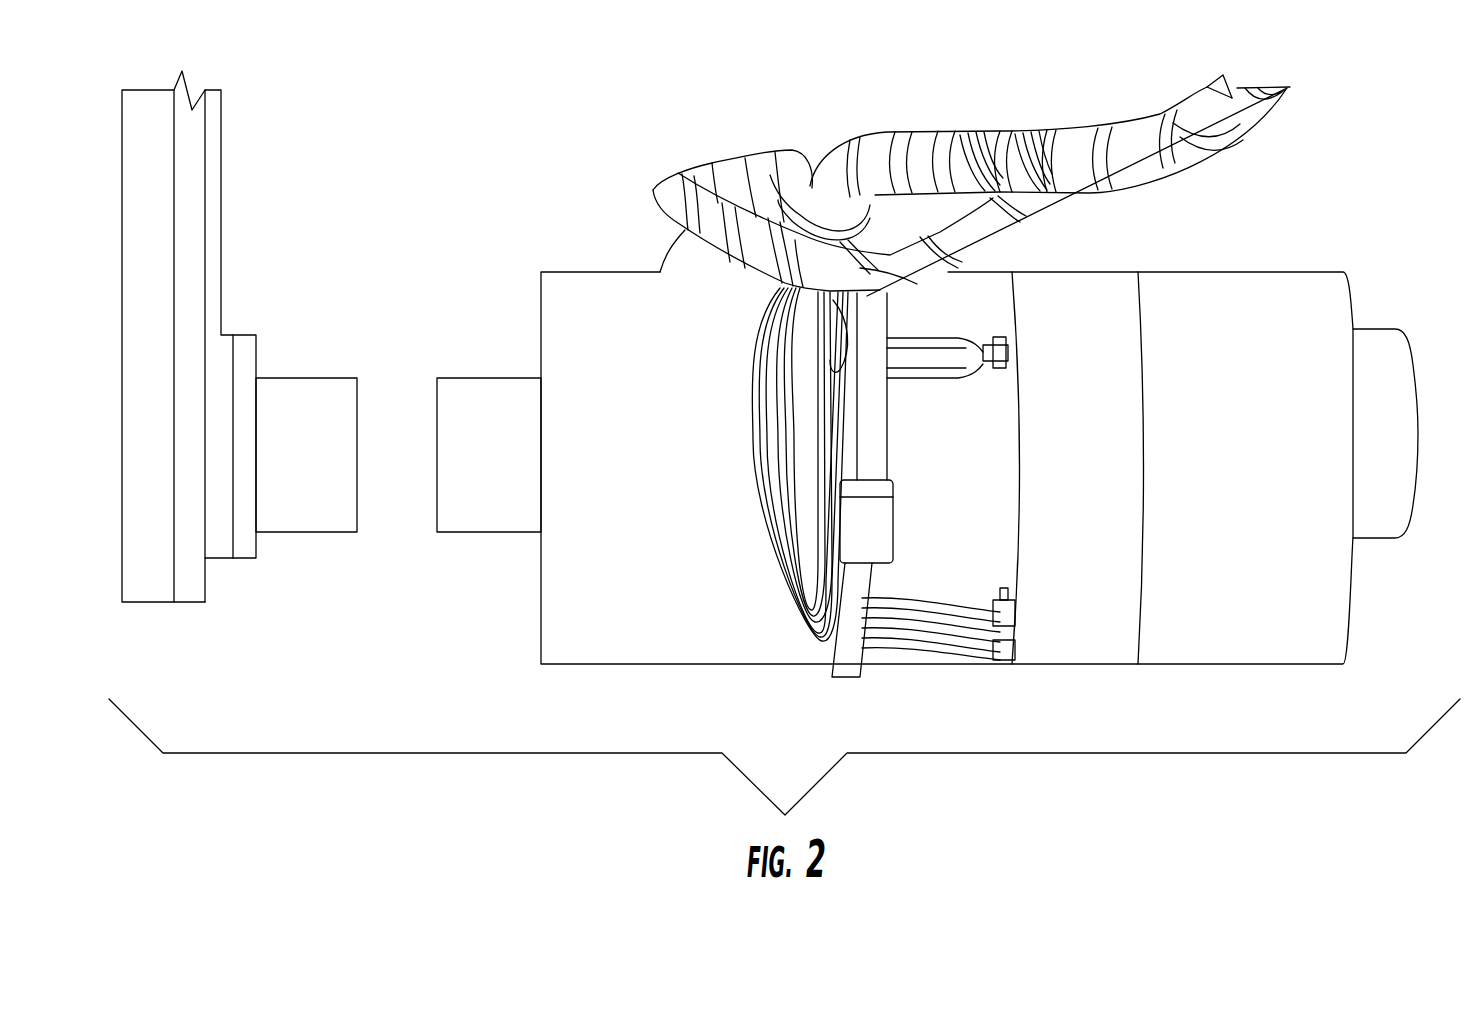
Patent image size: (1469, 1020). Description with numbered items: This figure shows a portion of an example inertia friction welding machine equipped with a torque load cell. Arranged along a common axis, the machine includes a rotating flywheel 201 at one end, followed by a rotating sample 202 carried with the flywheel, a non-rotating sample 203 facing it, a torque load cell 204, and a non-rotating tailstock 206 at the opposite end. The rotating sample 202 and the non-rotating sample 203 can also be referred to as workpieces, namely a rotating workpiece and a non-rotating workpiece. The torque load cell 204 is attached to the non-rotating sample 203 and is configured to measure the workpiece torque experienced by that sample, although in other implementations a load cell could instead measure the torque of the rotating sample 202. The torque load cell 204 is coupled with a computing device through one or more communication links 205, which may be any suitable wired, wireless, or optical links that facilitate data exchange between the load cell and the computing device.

The rotating flywheel 201 is at (158, 580).
The rotating sample 202 is at (313, 520).
The non-rotating sample 203 is at (487, 505).
The torque load cell 204 is at (666, 617).
The communication links 205 is at (1100, 140).
The non-rotating tailstock 206 is at (1388, 498).